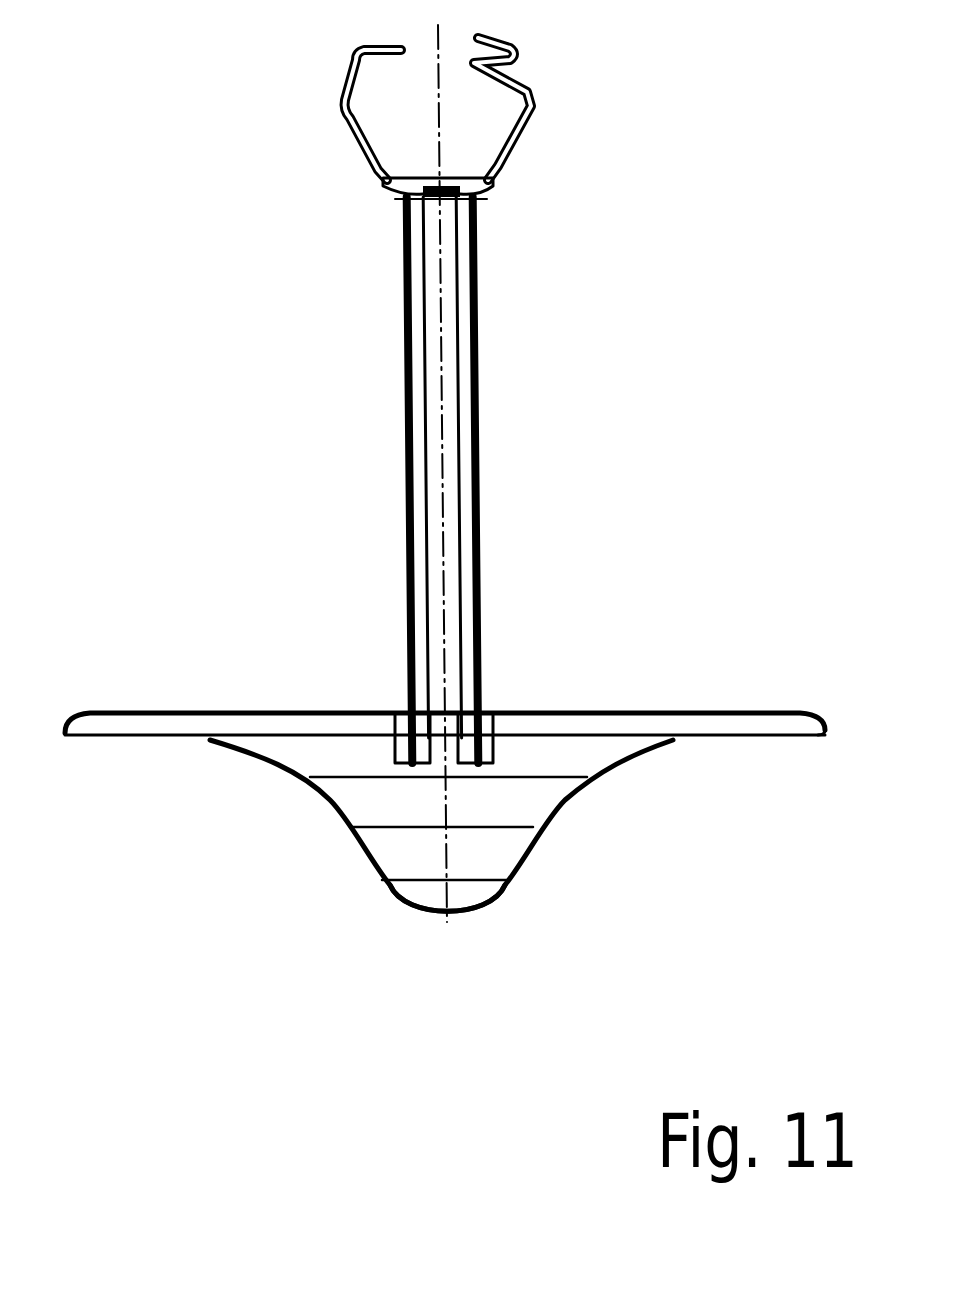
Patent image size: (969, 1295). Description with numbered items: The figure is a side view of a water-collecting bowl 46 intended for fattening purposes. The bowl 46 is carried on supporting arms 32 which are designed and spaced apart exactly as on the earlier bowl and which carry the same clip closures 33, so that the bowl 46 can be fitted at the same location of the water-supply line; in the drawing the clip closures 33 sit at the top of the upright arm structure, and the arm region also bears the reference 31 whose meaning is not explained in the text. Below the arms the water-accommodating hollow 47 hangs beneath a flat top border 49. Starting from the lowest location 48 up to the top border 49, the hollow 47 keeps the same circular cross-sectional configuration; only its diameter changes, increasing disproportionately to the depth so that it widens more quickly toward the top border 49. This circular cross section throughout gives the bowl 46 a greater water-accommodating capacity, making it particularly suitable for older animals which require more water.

The outer tube 31 is at (448, 488).
The supporting arms 32 is at (450, 367).
The clip closures 33 is at (350, 128).
The water-collecting bowl 46 is at (628, 548).
The water-accommodating hollow 47 is at (527, 822).
The lowest location 48 is at (460, 910).
The top border 49 is at (702, 725).